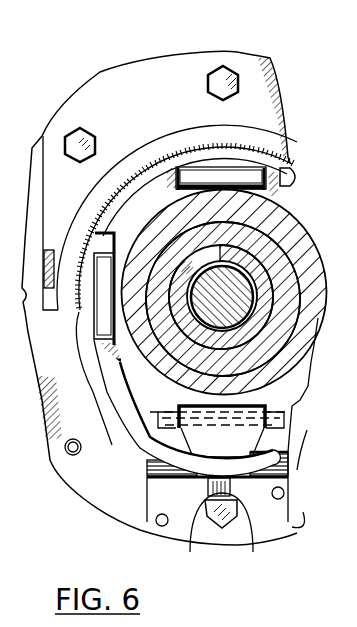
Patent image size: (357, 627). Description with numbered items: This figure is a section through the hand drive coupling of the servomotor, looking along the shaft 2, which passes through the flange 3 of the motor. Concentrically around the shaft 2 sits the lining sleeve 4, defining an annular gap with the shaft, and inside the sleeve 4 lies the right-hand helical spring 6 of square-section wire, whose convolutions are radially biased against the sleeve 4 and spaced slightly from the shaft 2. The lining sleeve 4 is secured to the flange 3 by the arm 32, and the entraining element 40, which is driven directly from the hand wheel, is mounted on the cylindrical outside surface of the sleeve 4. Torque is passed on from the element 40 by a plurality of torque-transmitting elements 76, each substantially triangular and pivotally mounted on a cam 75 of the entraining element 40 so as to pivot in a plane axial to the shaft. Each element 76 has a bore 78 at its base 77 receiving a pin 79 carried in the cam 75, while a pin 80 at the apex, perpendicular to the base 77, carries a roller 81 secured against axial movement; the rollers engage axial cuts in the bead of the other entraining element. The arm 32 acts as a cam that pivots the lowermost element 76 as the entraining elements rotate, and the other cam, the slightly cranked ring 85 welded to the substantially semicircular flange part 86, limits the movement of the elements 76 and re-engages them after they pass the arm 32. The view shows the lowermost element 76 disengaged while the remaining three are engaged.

The shaft 2 is at (253, 315).
The flange 3 is at (92, 488).
The lining sleeve 4 is at (280, 265).
The helical spring 6 is at (305, 350).
The arm 32 is at (113, 414).
The entraining element 40 is at (294, 238).
The cam 75 is at (167, 168).
The torque-transmitting element 76 is at (238, 176).
The base 77 is at (298, 399).
The bore 78 is at (268, 436).
The pin 79 is at (290, 413).
The pin 80 is at (190, 552).
The roller 81 is at (253, 552).
The ring 85 is at (82, 333).
The flange part 86 is at (142, 70).